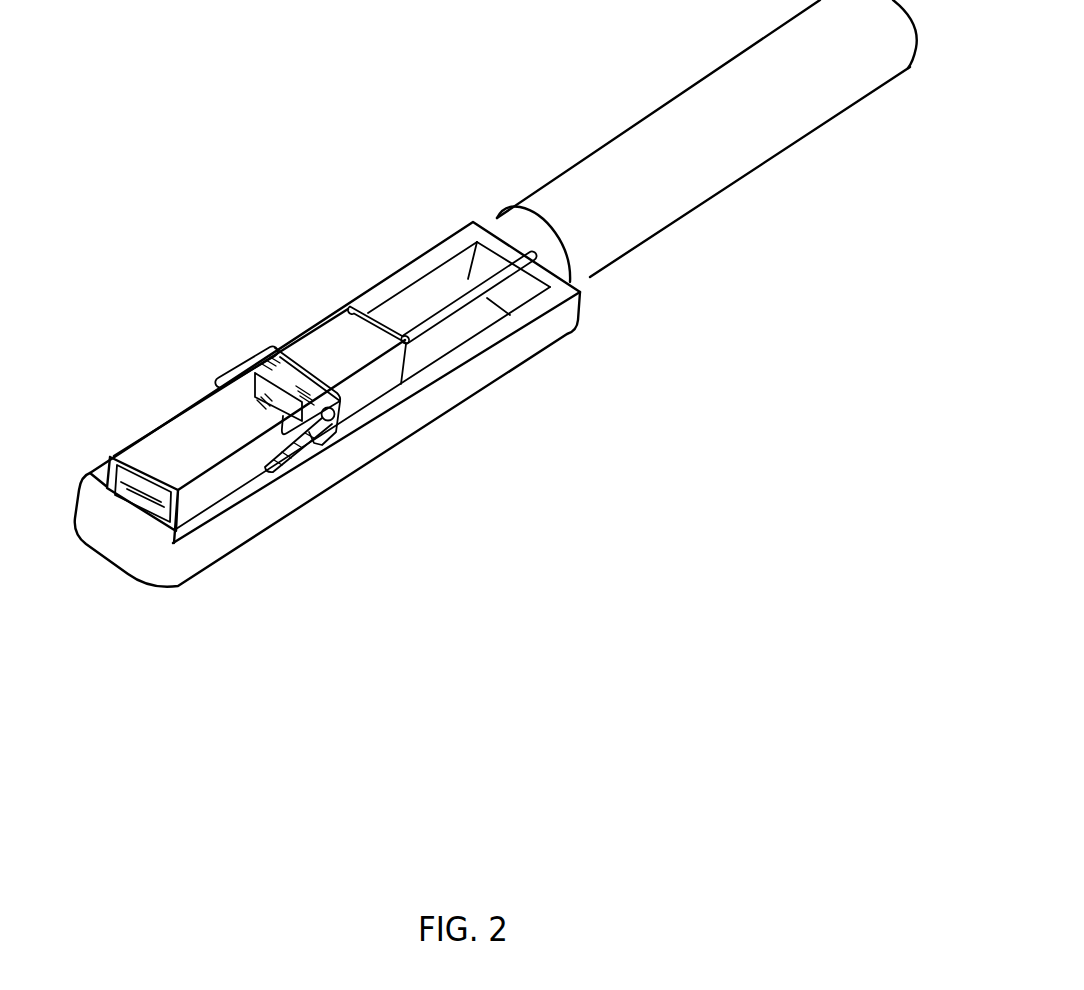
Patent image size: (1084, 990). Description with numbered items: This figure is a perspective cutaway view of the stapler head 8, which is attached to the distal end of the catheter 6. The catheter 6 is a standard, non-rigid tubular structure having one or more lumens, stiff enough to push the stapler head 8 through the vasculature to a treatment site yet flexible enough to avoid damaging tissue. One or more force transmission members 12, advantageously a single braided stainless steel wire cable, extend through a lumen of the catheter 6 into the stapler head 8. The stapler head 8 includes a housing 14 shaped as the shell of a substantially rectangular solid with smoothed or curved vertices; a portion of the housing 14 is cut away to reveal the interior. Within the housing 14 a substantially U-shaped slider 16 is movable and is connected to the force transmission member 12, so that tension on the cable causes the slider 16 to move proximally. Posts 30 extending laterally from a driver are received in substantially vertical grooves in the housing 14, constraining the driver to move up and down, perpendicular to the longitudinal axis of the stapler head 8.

The stapler head 8 is at (148, 160).
The catheter 6 is at (613, 133).
The force transmission member 12 is at (452, 300).
The housing 14 is at (457, 400).
The slider 16 is at (302, 326).
The post 30 is at (244, 359).